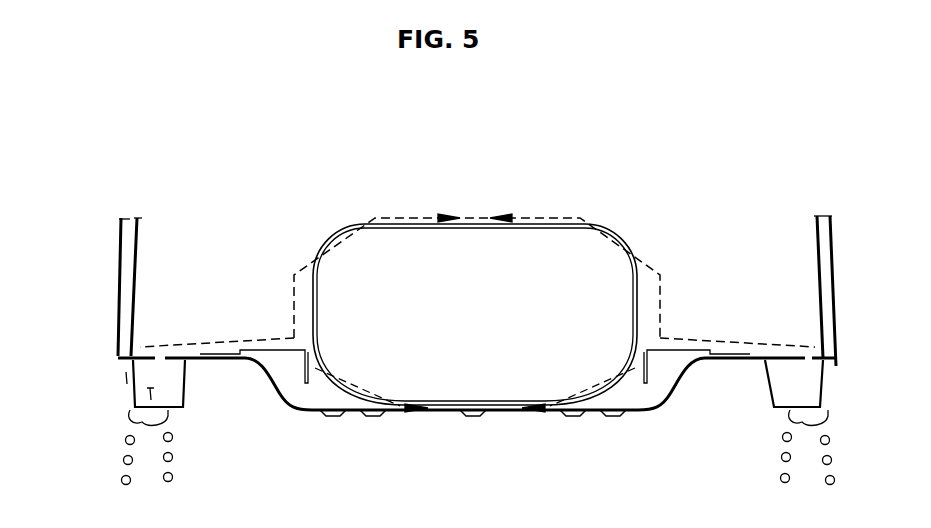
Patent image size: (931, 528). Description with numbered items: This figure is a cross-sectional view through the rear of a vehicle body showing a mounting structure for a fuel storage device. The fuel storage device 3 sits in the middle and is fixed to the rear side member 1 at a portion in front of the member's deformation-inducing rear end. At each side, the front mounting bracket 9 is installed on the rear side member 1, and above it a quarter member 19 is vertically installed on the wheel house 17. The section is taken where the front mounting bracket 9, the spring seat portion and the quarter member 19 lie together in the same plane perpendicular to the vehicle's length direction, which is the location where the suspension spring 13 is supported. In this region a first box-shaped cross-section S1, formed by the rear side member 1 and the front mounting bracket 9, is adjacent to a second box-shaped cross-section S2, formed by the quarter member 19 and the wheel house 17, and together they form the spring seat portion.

The rear side member 1 is at (187, 398).
The fuel storage device 3 is at (378, 228).
The front mounting bracket 9 is at (128, 360).
The suspension spring 13 is at (174, 477).
The wheel house 17 is at (138, 279).
The quarter member 19 is at (122, 273).
The first box-shaped cross-section S1 is at (130, 410).
The second box-shaped cross-section S2 is at (125, 378).